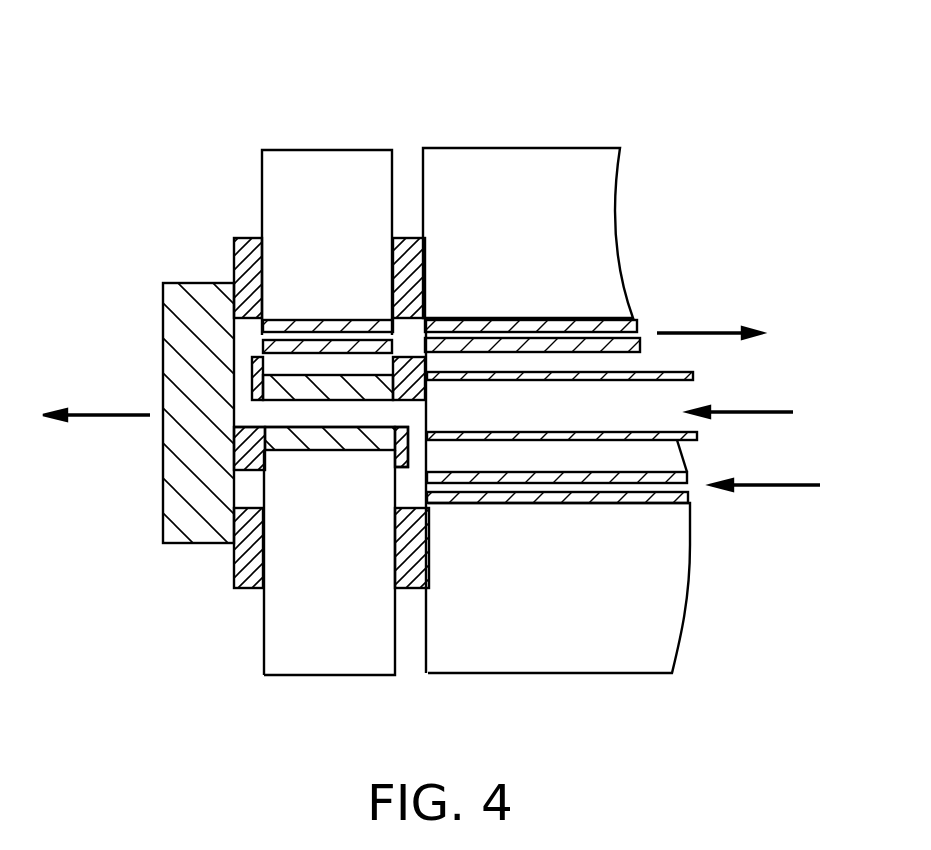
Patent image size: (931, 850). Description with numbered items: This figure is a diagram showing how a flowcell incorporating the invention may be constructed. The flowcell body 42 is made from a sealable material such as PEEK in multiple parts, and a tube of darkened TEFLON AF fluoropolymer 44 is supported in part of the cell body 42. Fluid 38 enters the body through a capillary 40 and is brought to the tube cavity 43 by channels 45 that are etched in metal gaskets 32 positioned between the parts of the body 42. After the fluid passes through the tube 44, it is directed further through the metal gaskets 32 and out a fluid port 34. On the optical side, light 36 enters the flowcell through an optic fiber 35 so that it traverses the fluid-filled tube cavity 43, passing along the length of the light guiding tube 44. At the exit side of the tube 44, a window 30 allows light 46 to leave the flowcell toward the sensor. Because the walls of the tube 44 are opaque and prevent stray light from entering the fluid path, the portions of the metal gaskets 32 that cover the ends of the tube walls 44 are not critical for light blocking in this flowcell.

The window 30 is at (205, 283).
The metal gaskets 32 is at (247, 237).
The fluid port 34 is at (688, 332).
The optic fiber 35 is at (653, 367).
The light 36 is at (732, 410).
The fluid 38 is at (767, 483).
The capillary 40 is at (627, 503).
The flowcell body 42 is at (363, 675).
The tube cavity 43 is at (345, 413).
The tube of darkened TEFLON AF fluoropolymer 44 is at (278, 452).
The channels 45 is at (252, 333).
The light 46 is at (87, 412).